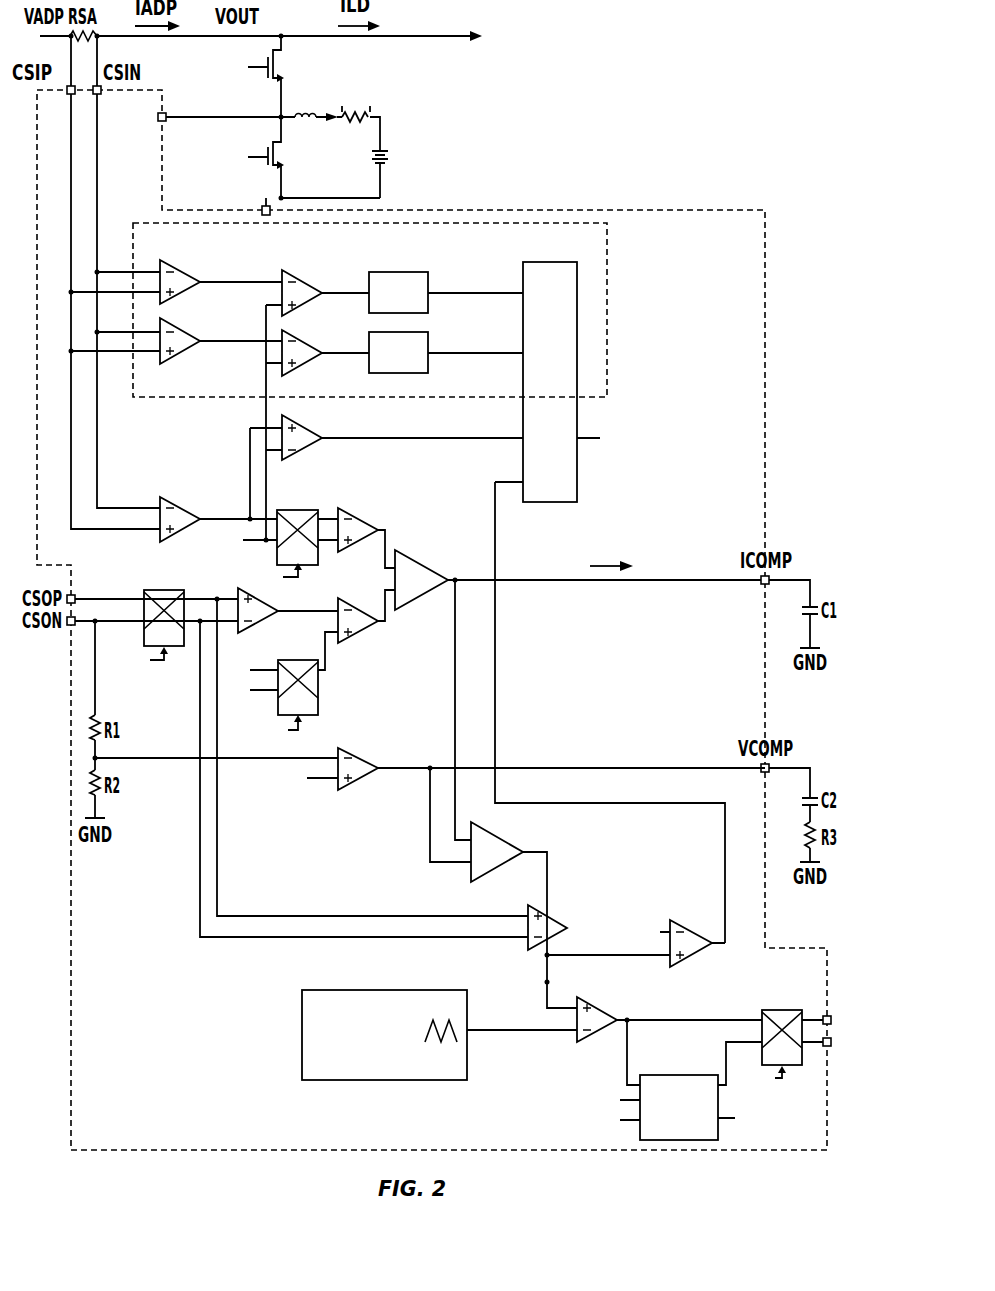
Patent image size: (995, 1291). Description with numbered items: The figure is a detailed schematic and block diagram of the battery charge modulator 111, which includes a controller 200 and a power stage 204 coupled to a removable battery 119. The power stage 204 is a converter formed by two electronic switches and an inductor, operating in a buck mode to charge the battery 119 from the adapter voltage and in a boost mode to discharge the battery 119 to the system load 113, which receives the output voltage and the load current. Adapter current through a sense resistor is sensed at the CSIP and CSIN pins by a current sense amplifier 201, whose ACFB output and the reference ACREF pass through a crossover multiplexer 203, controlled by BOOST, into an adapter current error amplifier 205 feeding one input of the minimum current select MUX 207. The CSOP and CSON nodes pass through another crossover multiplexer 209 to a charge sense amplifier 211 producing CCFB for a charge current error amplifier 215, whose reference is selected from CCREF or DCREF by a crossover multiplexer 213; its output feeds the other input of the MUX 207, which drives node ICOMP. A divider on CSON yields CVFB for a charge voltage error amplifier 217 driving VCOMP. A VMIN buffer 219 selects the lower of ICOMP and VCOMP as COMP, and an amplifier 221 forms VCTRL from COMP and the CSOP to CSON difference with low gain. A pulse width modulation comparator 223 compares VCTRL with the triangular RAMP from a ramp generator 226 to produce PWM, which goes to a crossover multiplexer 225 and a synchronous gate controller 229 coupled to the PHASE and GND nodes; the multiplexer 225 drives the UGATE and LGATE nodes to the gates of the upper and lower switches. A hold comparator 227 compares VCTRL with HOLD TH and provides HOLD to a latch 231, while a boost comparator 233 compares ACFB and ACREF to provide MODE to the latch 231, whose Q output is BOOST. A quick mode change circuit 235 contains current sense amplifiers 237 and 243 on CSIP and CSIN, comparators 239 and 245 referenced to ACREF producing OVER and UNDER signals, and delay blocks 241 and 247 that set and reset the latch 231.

The battery charge modulator 111 is at (601, 134).
The system load 113 is at (567, 36).
The battery 119 is at (390, 158).
The controller 200 is at (607, 212).
The current sense amplifier 201 is at (185, 507).
The crossover multiplexer 203 is at (296, 510).
The power stage 204 is at (350, 187).
The adapter current error amplifier 205 is at (355, 510).
The minimum current select MUX 207 is at (420, 562).
The crossover multiplexer 209 is at (166, 590).
The charge sense amplifier 211 is at (262, 622).
The crossover multiplexer 213 is at (300, 660).
The charge current error amplifier 215 is at (360, 586).
The charge voltage error amplifier 217 is at (355, 752).
The VMIN buffer 219 is at (500, 838).
The amplifier 221 is at (550, 916).
The pulse width modulation comparator 223 is at (600, 1001).
The crossover multiplexer 225 is at (786, 1010).
The ramp generator 226 is at (392, 990).
The hold comparator 227 is at (697, 908).
The synchronous gate controller 229 is at (663, 1075).
The latch 231 is at (577, 465).
The boost comparator 233 is at (300, 430).
The quick mode change circuit 235 is at (607, 285).
The current sense amplifier 237 is at (172, 264).
The comparator 239 is at (300, 274).
The delay block 241 is at (428, 280).
The current sense amplifier 243 is at (172, 324).
The comparator 245 is at (300, 334).
The delay block 247 is at (428, 340).